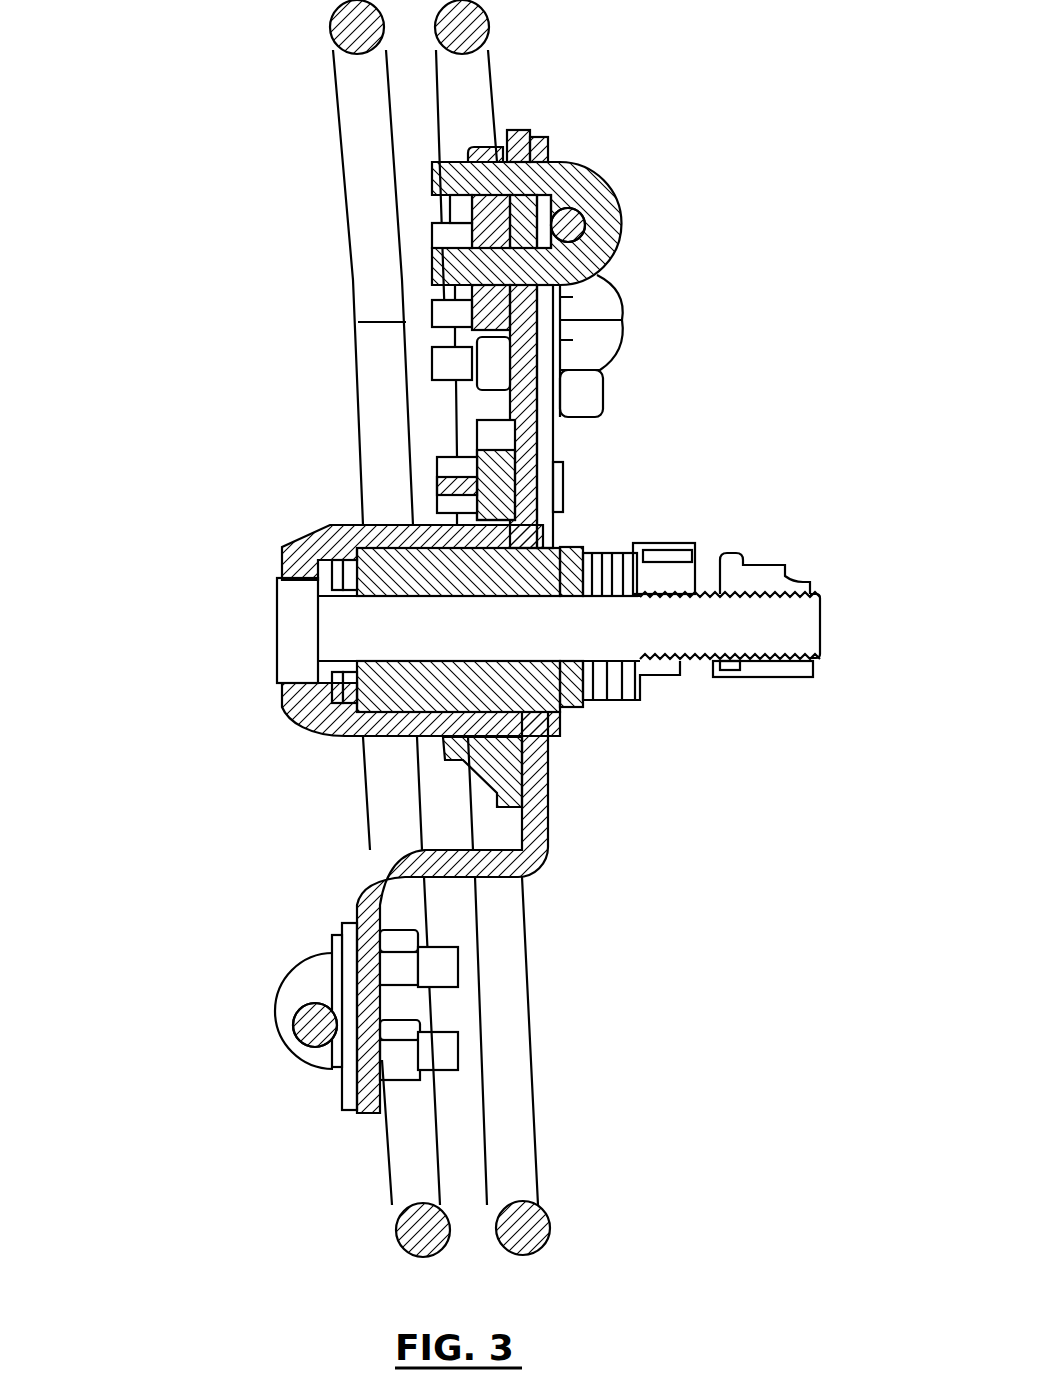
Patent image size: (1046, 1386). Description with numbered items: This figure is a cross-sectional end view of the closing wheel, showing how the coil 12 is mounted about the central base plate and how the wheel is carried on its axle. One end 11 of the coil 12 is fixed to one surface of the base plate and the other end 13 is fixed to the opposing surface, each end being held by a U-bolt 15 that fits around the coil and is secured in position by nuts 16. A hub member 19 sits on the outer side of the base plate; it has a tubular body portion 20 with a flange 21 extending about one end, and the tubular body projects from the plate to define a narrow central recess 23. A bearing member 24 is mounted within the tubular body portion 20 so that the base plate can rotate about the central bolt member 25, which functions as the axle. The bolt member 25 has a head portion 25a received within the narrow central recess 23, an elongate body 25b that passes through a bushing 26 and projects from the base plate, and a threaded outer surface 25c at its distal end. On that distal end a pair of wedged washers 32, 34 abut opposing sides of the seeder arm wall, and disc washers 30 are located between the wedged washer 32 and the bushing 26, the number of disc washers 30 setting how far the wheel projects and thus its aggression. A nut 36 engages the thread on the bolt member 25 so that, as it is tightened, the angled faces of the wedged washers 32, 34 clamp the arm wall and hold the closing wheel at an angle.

The end of the coil 11 is at (307, 1028).
The coil 12 is at (527, 1150).
The other end of the coil 13 is at (573, 212).
The U-bolt 15 is at (607, 238).
The nut 16 is at (497, 145).
The hub member 19 is at (335, 530).
The tubular body portion 20 is at (410, 520).
The flange 21 is at (503, 795).
The narrow central recess 23 is at (293, 702).
The bearing member 24 is at (447, 568).
The bolt member 25 is at (297, 633).
The head portion 25a is at (278, 620).
The elongate body 25b is at (570, 647).
The threaded outer surface 25c is at (690, 660).
The bushing 26 is at (577, 567).
The disc washer 30 is at (608, 705).
The wedged washer 32 is at (667, 553).
The wedged washer 34 is at (727, 667).
The nut 36 is at (800, 582).